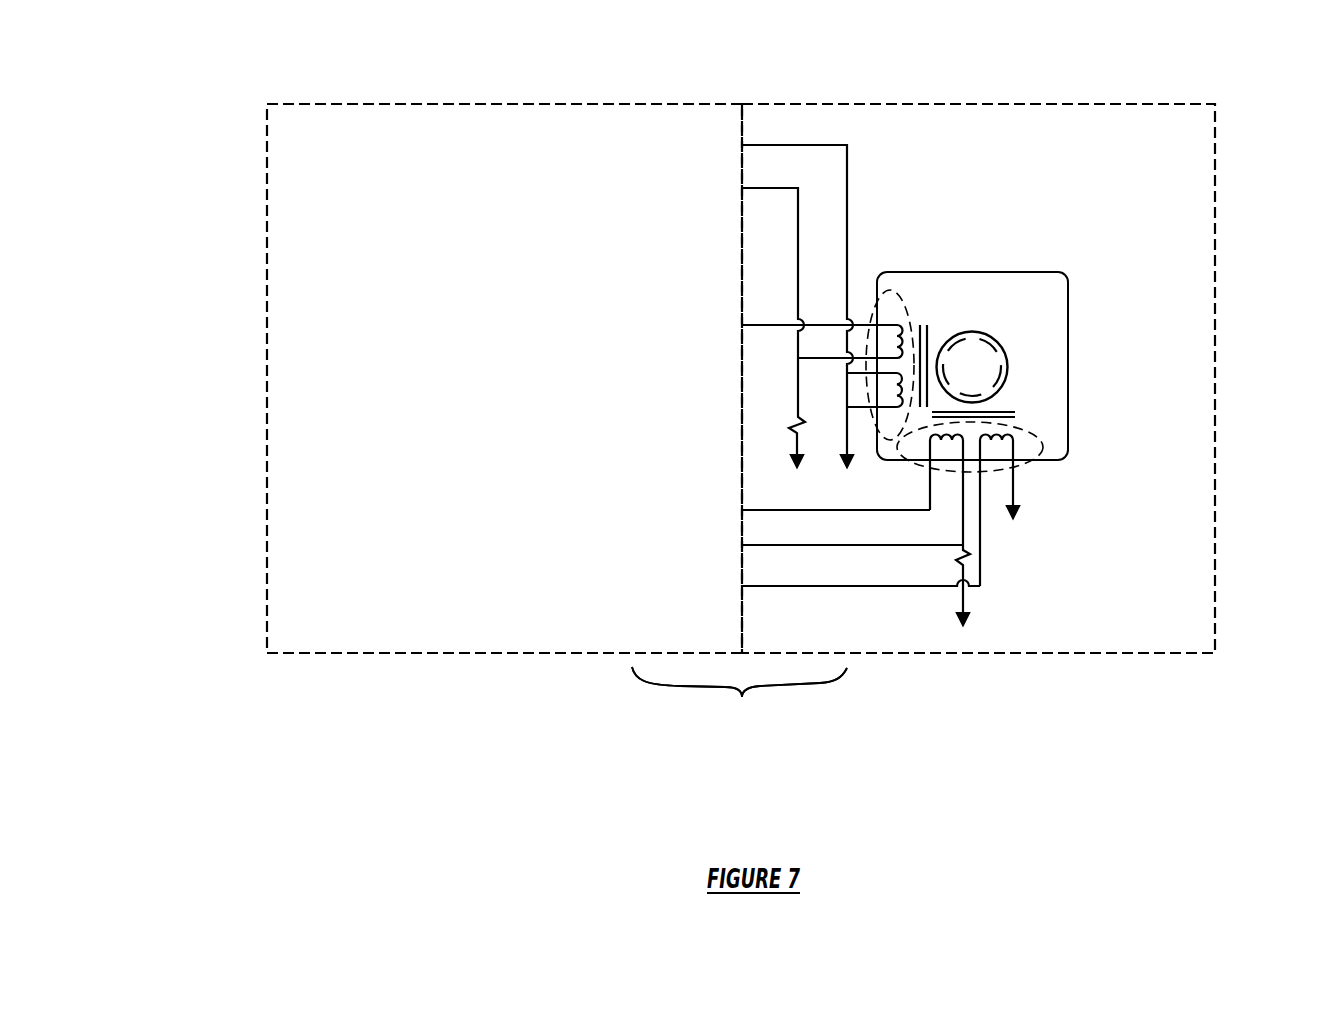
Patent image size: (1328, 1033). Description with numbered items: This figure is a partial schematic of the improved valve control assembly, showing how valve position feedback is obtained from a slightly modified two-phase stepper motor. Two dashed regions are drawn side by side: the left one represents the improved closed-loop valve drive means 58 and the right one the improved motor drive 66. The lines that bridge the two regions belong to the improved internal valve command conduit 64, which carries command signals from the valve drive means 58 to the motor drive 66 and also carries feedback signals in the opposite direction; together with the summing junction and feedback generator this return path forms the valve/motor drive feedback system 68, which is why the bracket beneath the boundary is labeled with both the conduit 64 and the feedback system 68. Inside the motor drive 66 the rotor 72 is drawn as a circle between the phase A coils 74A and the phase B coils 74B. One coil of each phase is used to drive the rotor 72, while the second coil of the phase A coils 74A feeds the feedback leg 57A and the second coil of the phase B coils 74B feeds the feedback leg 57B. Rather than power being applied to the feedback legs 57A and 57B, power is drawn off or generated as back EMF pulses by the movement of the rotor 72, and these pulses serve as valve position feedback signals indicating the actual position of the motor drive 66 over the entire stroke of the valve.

The improved closed-loop valve drive means 58 is at (480, 653).
The improved motor drive 66 is at (1215, 358).
The improved internal valve command conduit 64 is at (742, 697).
The valve/motor drive feedback system 68 is at (648, 778).
The feedback leg 57A is at (798, 217).
The feedback leg 57B is at (905, 588).
The phase A coils 74A is at (903, 300).
The phase B coils 74B is at (1038, 438).
The rotor 72 is at (1003, 345).